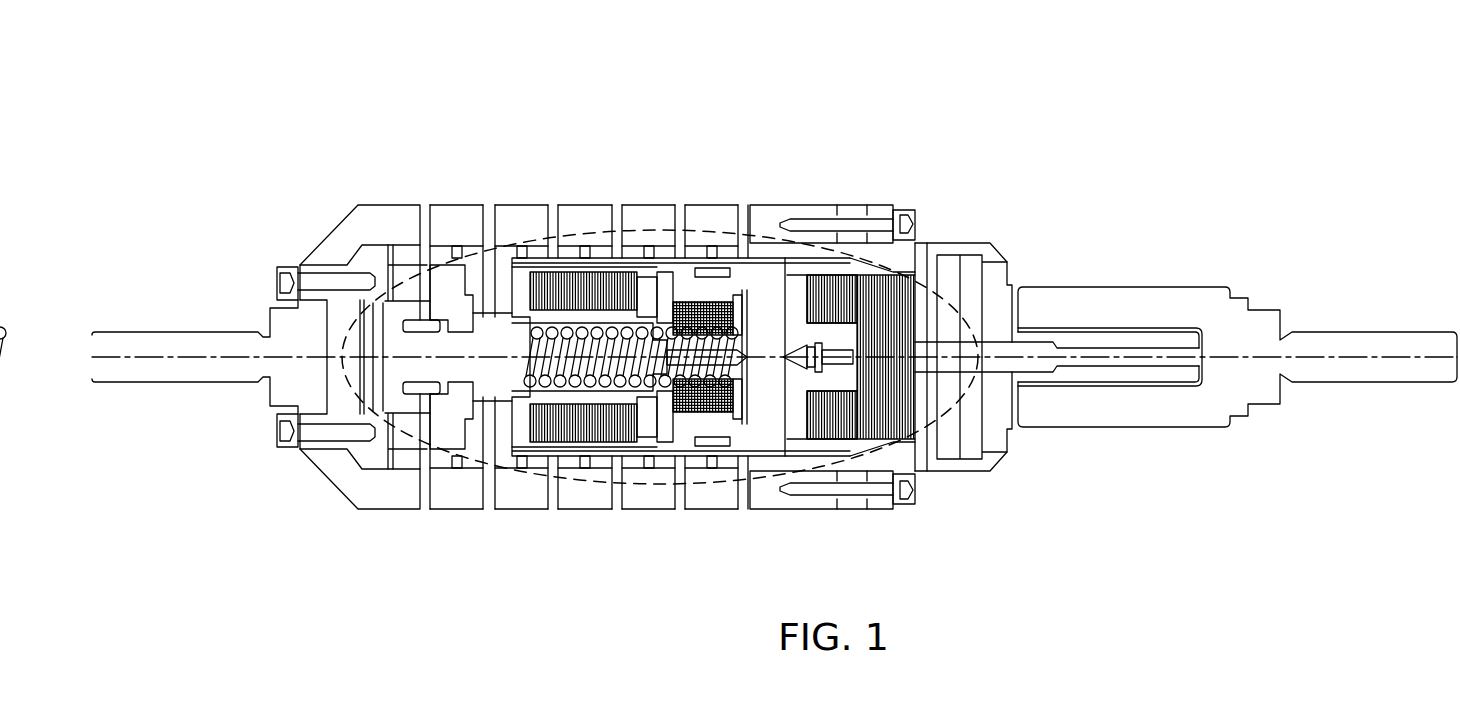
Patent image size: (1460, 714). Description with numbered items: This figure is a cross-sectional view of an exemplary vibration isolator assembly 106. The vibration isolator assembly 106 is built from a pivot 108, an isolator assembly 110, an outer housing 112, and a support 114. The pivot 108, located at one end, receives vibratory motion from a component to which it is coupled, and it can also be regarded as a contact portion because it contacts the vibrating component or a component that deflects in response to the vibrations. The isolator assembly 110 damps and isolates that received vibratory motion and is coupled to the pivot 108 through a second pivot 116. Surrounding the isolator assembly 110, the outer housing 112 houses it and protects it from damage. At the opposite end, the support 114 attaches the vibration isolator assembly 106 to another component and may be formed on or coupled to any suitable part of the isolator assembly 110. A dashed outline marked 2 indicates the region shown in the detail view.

The vibration isolator assembly 106 is at (728, 296).
The pivot 108 is at (1158, 428).
The isolator assembly 110 is at (463, 407).
The outer housing 112 is at (387, 215).
The support 114 is at (172, 345).
The pivot 116 is at (1033, 377).
The detail section indicator 2 is at (653, 488).